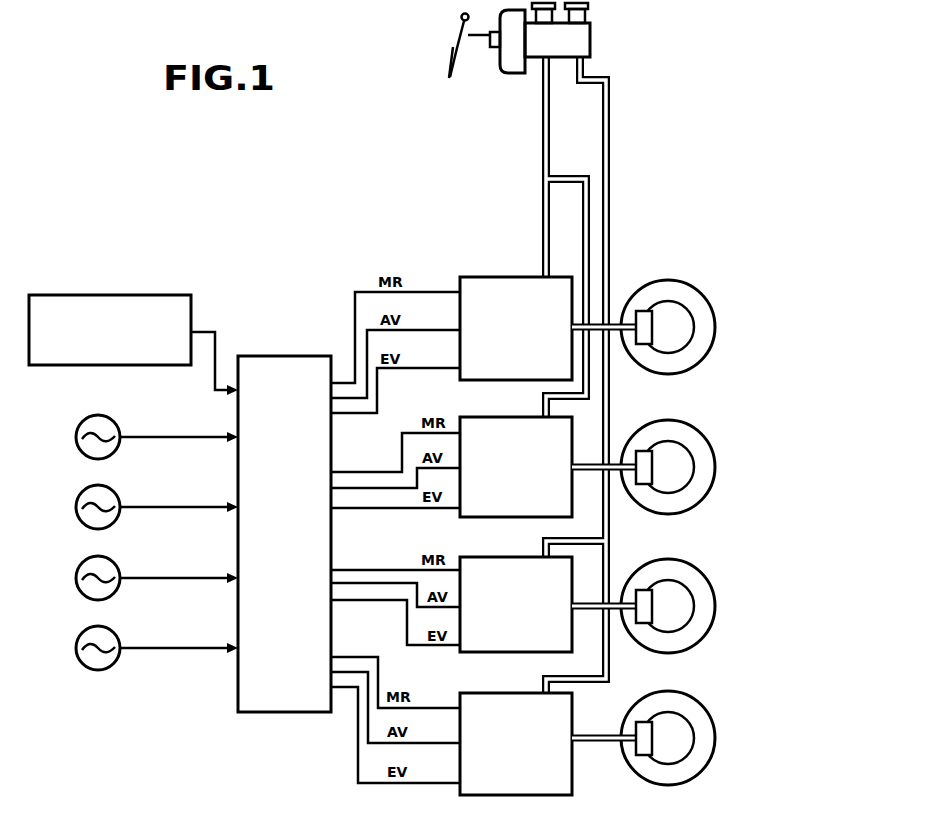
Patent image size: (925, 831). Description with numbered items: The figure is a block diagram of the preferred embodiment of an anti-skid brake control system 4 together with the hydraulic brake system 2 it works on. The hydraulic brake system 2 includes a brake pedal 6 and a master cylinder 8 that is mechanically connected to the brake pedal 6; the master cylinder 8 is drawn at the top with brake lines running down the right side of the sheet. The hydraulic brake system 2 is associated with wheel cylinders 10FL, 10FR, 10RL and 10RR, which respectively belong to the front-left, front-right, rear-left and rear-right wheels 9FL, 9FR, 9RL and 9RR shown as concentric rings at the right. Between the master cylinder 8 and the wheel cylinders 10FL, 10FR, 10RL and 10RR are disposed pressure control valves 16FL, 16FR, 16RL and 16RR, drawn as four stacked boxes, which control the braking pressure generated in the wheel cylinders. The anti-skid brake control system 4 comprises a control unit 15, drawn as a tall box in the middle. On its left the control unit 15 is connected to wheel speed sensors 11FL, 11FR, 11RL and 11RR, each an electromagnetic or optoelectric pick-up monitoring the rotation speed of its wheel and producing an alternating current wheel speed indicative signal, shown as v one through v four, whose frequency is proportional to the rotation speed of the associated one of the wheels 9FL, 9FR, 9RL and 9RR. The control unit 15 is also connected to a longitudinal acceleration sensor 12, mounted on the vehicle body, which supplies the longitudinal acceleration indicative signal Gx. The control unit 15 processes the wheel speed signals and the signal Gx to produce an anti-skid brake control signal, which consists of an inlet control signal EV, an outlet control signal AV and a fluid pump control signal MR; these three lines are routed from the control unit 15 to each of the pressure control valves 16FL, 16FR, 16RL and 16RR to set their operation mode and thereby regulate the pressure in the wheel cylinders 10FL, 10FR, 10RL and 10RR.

The hydraulic brake system 2 is at (617, 143).
The anti-skid brake control system 4 is at (284, 465).
The brake pedal 6 is at (440, 62).
The master cylinder 8 is at (591, 40).
The front-left wheel 9FL is at (704, 281).
The front-right wheel 9FR is at (705, 430).
The rear-left wheel 9RL is at (705, 569).
The rear-right wheel 9RR is at (705, 700).
The front-left wheel cylinder 10FL is at (641, 311).
The front-right wheel cylinder 10FR is at (641, 451).
The rear-left wheel cylinder 10RL is at (641, 590).
The rear-right wheel cylinder 10RR is at (641, 722).
The front-left wheel speed sensor 11FL is at (76, 437).
The front-right wheel speed sensor 11FR is at (76, 507).
The rear-left wheel speed sensor 11RL is at (76, 578).
The rear-right wheel speed sensor 11RR is at (76, 648).
The longitudinal acceleration sensor 12 is at (77, 295).
The control unit 15 is at (300, 356).
The front-left pressure control valve 16FL is at (470, 277).
The front-right pressure control valve 16FR is at (479, 417).
The rear-left pressure control valve 16RL is at (478, 557).
The rear-right pressure control valve 16RR is at (479, 693).